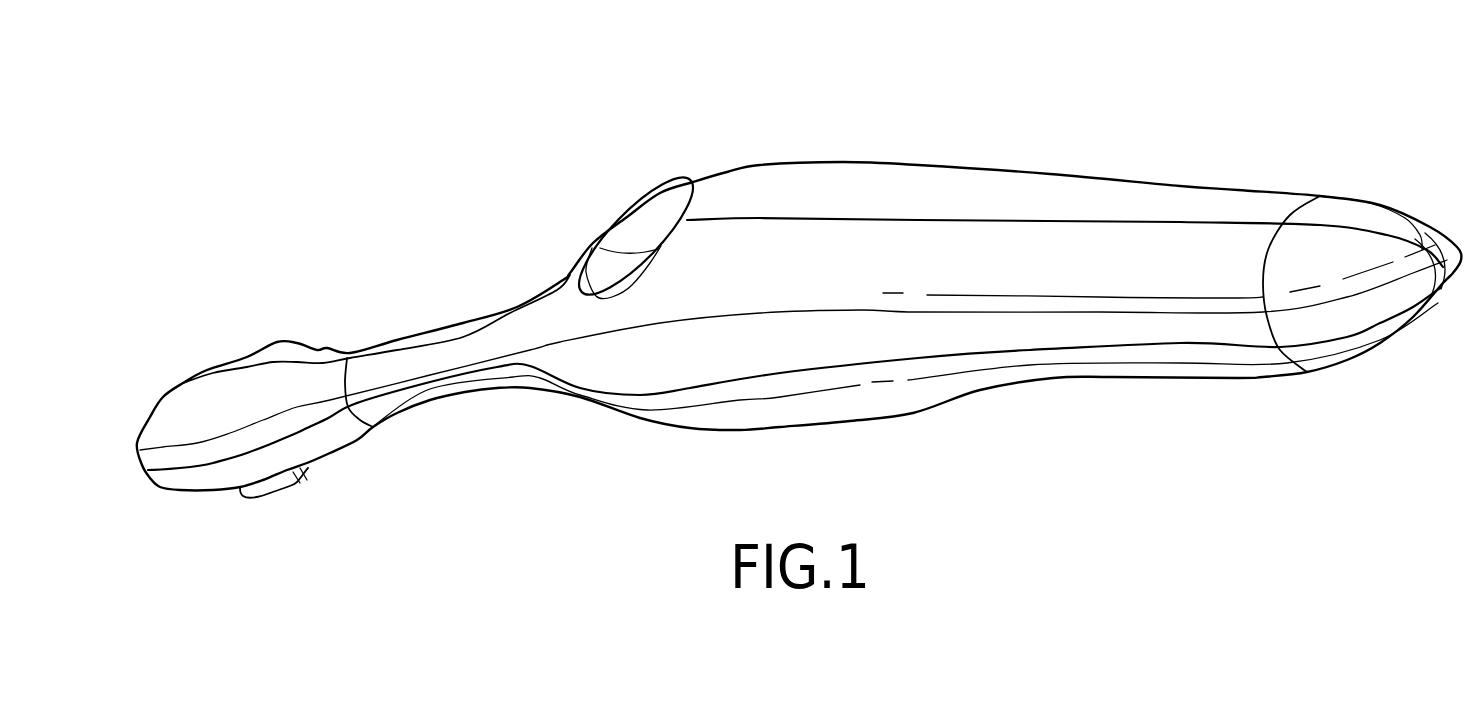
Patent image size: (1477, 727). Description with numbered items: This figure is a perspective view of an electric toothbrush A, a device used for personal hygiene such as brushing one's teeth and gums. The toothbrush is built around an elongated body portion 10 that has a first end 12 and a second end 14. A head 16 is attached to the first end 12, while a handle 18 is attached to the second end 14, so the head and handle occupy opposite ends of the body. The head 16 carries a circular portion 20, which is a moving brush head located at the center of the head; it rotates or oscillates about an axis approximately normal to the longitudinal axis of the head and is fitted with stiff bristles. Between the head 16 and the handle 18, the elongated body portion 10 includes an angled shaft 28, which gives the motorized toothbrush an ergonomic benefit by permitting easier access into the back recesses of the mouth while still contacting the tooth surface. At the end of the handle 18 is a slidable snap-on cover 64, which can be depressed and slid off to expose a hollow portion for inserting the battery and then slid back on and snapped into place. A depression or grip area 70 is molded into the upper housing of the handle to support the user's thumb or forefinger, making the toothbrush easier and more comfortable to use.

The electric toothbrush A is at (855, 154).
The elongated body portion 10 is at (832, 377).
The first end 12 is at (327, 348).
The second end 14 is at (1218, 367).
The head 16 is at (247, 387).
The handle 18 is at (1053, 325).
The circular portion 20 is at (257, 492).
The angled shaft 28 is at (437, 385).
The slidable snap-on cover 64 is at (1355, 343).
The depression 70 is at (672, 207).